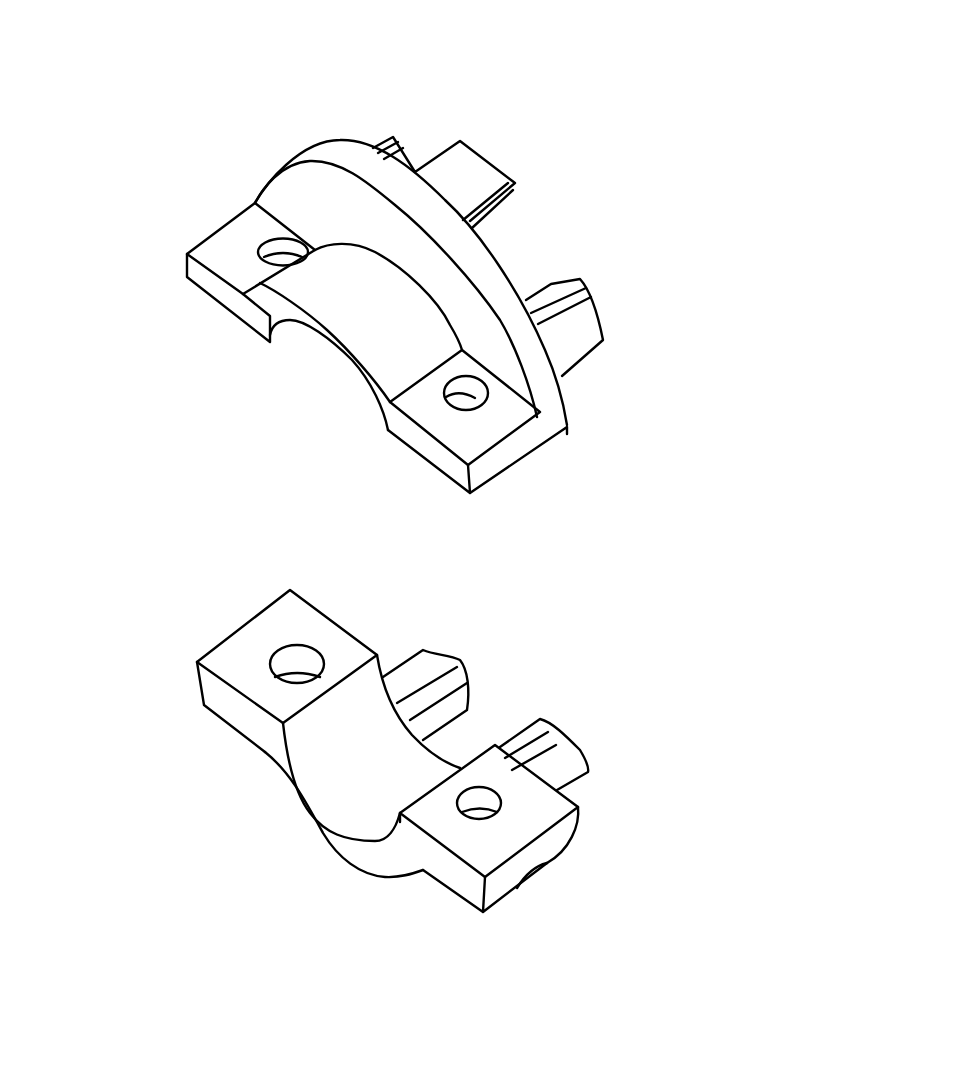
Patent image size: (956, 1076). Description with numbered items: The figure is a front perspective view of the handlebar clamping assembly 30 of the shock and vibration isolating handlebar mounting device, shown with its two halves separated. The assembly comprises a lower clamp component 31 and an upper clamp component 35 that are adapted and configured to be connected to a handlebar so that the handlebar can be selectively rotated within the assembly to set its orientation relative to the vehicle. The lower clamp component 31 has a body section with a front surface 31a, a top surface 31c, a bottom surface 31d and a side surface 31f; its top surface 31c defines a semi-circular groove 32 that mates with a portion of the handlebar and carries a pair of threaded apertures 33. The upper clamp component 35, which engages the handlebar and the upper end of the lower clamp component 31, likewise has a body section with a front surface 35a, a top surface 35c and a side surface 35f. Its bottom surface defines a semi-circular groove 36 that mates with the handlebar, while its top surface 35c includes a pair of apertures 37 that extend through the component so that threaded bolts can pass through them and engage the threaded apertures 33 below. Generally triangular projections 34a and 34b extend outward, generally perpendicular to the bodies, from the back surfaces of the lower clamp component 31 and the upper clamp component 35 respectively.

The handlebar clamping assembly 30 is at (148, 92).
The lower clamp component 31 is at (225, 812).
The front surface 31a is at (332, 828).
The top surface 31c is at (258, 638).
The bottom surface 31d is at (520, 893).
The side surface 31f is at (538, 860).
The semi-circular groove 32 is at (359, 745).
The threaded apertures 33 is at (302, 657).
The projections 34a is at (563, 770).
The projections 34b is at (482, 166).
The upper clamp component 35 is at (182, 353).
The front surface 35a is at (450, 287).
The top surface 35c is at (213, 247).
The side surface 35f is at (494, 470).
The semi-circular groove 36 is at (343, 372).
The apertures 37 is at (277, 248).